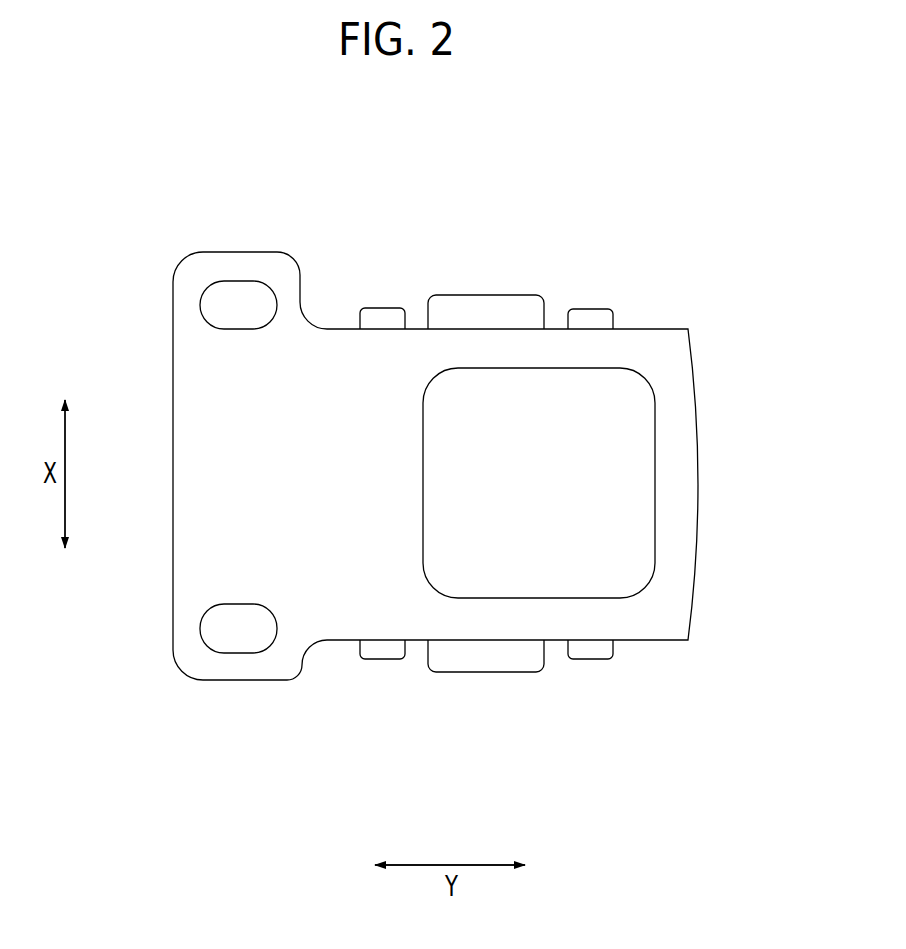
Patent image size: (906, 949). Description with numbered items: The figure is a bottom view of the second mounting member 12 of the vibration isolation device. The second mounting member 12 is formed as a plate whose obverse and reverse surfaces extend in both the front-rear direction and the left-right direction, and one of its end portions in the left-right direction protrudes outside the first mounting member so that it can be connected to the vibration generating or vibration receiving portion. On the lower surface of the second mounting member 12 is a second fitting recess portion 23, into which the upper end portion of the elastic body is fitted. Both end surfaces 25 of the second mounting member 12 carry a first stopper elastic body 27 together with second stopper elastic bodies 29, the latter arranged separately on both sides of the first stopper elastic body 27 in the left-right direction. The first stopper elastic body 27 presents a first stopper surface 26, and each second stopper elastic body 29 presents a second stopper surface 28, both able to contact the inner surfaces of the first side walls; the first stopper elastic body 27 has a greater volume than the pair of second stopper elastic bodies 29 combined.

The second mounting member 12 is at (153, 194).
The second fitting recess portion 23 is at (653, 478).
The end surfaces 25 is at (668, 328).
The first stopper surfaces 26 is at (468, 295).
The first stopper elastic bodies 27 is at (500, 293).
The second stopper surfaces 28 is at (585, 309).
The second stopper elastic bodies 29 is at (383, 306).